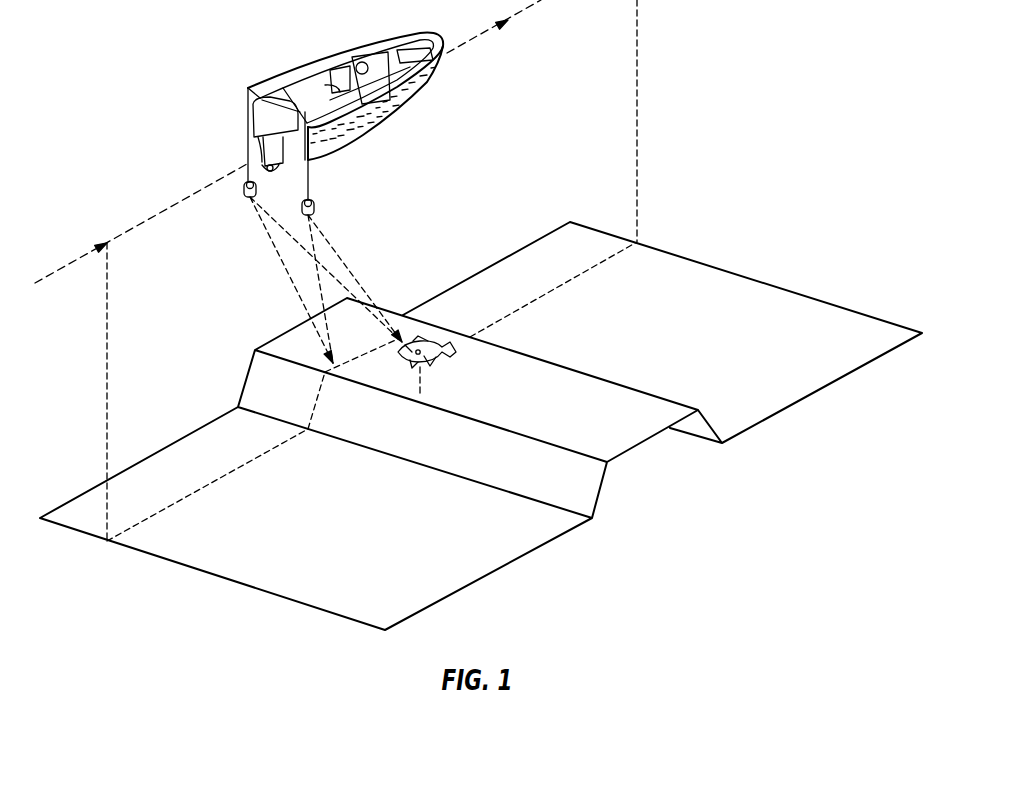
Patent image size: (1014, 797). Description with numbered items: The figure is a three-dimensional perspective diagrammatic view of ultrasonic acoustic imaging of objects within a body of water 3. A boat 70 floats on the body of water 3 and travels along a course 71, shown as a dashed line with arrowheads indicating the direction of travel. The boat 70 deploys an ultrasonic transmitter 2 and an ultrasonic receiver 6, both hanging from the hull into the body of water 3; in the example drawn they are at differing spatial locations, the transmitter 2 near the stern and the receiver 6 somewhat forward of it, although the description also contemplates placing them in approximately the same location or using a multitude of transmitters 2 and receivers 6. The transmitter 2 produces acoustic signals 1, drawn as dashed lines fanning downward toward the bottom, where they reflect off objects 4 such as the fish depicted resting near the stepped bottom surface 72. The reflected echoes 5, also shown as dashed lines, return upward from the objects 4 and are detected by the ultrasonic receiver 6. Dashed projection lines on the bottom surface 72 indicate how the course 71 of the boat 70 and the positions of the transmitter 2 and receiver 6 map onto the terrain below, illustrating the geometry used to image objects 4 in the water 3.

The acoustic signals 1 is at (297, 232).
The ultrasonic transmitter 2 is at (242, 189).
The body of water 3 is at (548, 155).
The objects 4 is at (432, 363).
The reflected echoes 5 is at (343, 250).
The ultrasonic receiver 6 is at (318, 206).
The boat 70 is at (303, 64).
The course 71 is at (463, 43).
The bottom surface 72 is at (633, 347).